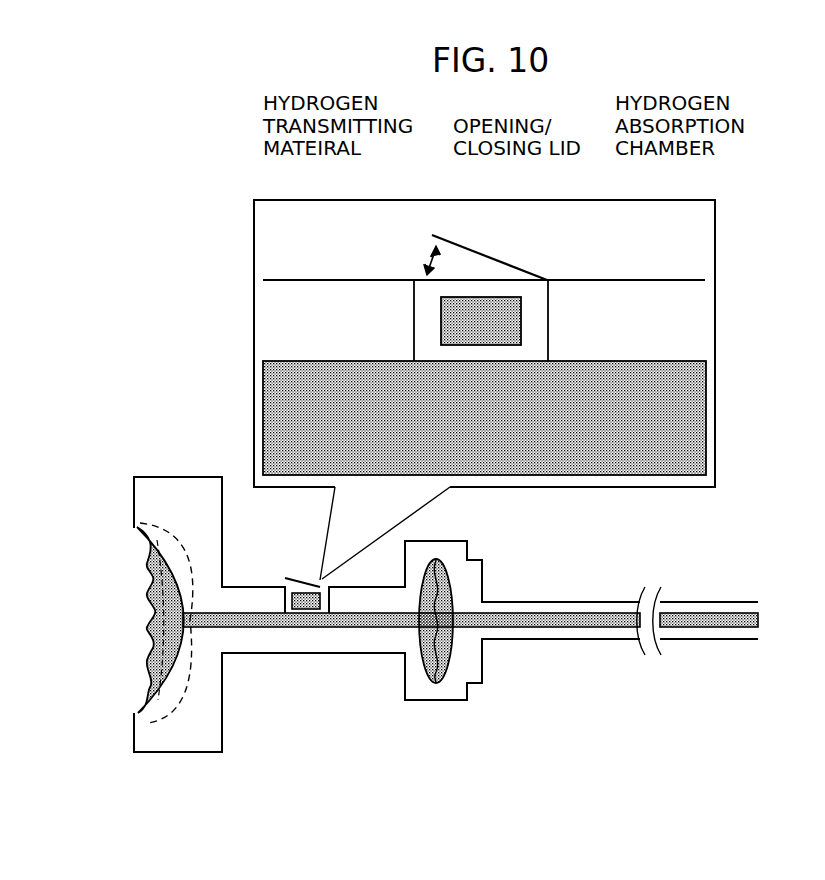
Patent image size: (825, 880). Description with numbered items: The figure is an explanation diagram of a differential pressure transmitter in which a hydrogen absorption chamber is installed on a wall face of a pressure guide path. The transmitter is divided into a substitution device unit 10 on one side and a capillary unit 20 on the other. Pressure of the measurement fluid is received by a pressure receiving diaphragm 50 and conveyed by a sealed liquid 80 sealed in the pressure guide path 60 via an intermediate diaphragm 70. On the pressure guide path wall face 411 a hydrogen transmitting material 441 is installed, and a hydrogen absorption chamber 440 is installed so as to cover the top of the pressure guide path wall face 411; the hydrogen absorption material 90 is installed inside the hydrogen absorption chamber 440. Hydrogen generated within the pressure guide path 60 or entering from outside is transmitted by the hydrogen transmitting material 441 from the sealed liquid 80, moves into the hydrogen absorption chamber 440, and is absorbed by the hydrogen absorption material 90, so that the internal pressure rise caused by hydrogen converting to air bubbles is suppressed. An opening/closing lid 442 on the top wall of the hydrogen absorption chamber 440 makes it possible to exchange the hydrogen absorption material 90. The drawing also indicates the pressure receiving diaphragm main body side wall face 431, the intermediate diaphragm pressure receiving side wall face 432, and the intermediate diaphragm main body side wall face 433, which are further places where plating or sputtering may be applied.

The substitution device unit 10 is at (433, 792).
The capillary unit 20 is at (752, 792).
The pressure receiving diaphragm 50 is at (147, 583).
The pressure guide path 60 is at (731, 600).
The intermediate diaphragm 70 is at (453, 665).
The sealed liquid 80 is at (667, 437).
The hydrogen absorption material 90 is at (521, 322).
The pressure guide path wall face 411 is at (715, 356).
The pressure receiving diaphragm main body side wall face 431 is at (177, 540).
The intermediate diaphragm pressure receiving side wall face 432 is at (428, 585).
The intermediate diaphragm main body side wall face 433 is at (433, 665).
The hydrogen absorption chamber 440 is at (537, 291).
The hydrogen transmitting material 441 is at (428, 363).
The opening/closing lid 442 is at (467, 245).